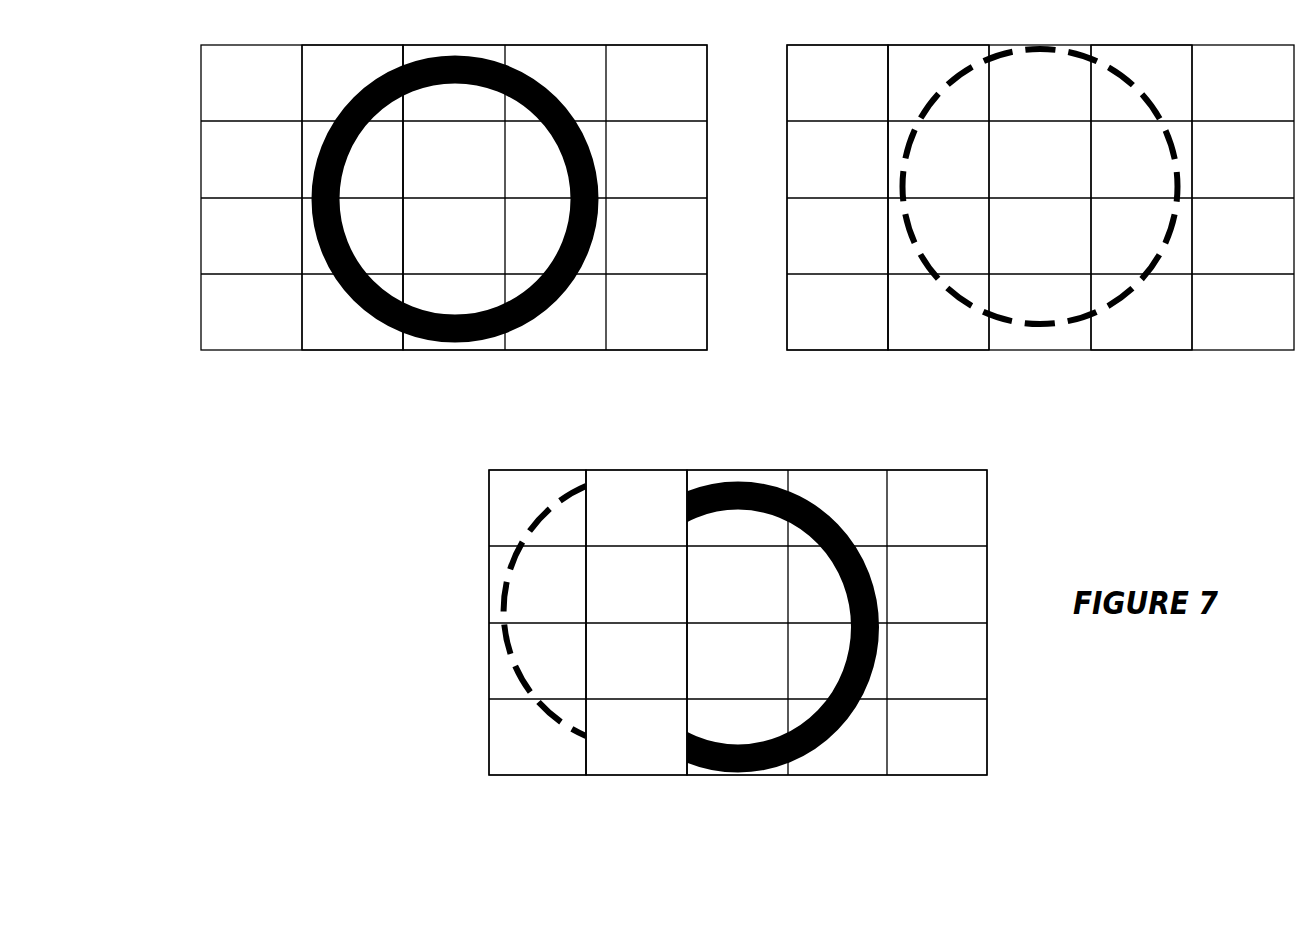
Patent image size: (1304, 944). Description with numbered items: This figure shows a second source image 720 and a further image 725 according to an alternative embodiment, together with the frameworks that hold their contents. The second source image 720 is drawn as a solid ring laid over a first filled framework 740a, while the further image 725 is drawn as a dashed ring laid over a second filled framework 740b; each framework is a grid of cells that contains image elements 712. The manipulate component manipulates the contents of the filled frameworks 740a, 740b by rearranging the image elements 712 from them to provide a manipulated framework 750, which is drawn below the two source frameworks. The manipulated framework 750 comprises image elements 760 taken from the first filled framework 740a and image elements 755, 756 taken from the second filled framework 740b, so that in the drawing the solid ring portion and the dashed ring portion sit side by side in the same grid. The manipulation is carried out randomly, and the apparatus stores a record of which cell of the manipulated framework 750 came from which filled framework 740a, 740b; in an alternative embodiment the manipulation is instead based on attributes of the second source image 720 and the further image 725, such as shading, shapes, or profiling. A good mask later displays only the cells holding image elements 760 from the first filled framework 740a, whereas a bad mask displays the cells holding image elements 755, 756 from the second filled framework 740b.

The image elements 712 is at (313, 257).
The second source image 720 is at (325, 138).
The further image 725 is at (1123, 302).
The first filled framework 740a is at (352, 350).
The second filled framework 740b is at (1112, 350).
The manipulated framework 750 is at (497, 653).
The image elements 755 is at (842, 350).
The image elements 756 is at (938, 350).
The image elements 760 is at (657, 350).